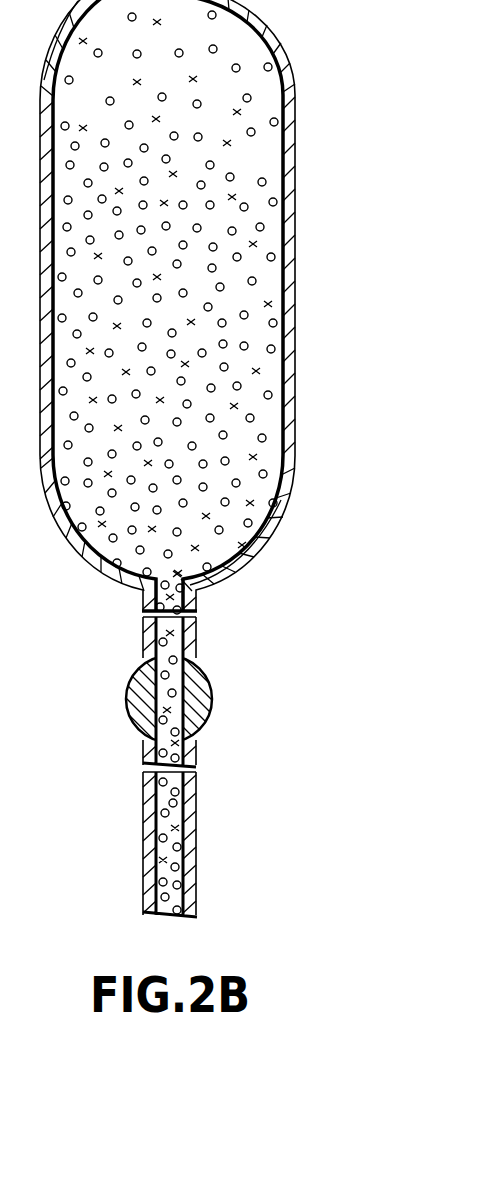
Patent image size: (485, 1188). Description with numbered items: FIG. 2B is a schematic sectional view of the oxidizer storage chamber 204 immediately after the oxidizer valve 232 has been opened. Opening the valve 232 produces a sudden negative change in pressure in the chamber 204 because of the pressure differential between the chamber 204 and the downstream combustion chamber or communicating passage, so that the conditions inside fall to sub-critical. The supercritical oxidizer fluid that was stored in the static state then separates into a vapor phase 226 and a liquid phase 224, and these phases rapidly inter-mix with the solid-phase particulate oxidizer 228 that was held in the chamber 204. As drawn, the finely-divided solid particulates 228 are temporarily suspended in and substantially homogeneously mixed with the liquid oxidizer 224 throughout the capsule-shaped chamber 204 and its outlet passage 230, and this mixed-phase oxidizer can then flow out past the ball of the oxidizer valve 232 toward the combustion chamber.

The oxidizer storage chamber 204 is at (255, 24).
The liquid phase 224 is at (267, 156).
The vapor phase 226 is at (234, 196).
The solid-phase particulate oxidizer 228 is at (274, 258).
The conduit 230 is at (195, 624).
The oxidizer valve 232 is at (207, 724).